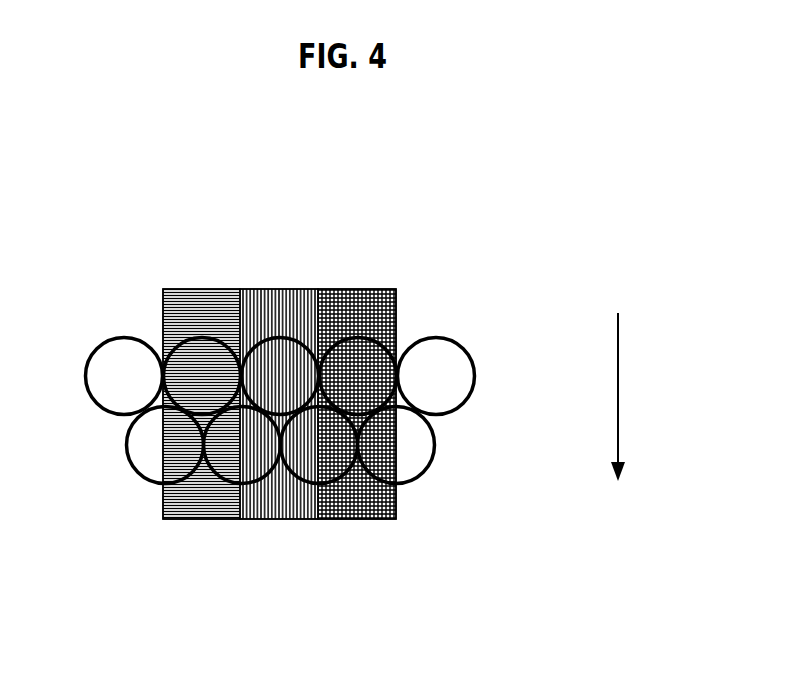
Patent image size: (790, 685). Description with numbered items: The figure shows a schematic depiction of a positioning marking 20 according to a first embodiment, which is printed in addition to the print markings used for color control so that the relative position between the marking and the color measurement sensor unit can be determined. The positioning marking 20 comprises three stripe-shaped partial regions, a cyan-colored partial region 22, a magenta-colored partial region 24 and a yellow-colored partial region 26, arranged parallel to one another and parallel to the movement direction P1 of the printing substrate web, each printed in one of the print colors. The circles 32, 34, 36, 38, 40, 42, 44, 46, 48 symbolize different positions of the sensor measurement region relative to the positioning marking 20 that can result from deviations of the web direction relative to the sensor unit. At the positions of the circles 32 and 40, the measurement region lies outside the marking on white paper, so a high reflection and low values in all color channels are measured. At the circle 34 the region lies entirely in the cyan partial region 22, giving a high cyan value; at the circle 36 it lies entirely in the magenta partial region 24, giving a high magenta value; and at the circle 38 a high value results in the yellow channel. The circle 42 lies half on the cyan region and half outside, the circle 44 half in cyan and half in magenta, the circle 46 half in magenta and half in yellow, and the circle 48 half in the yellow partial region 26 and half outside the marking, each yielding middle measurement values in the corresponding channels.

The positioning marking 20 is at (165, 278).
The cyan-colored partial region 22 is at (212, 296).
The magenta-colored partial region 24 is at (282, 297).
The yellow-colored partial region 26 is at (323, 292).
The circle 32 is at (86, 364).
The circle 34 is at (177, 327).
The circle 36 is at (290, 337).
The circle 38 is at (378, 323).
The circle 40 is at (460, 346).
The circle 42 is at (141, 479).
The circle 44 is at (258, 484).
The circle 46 is at (340, 482).
The circle 48 is at (433, 456).
The movement direction P1 is at (618, 398).